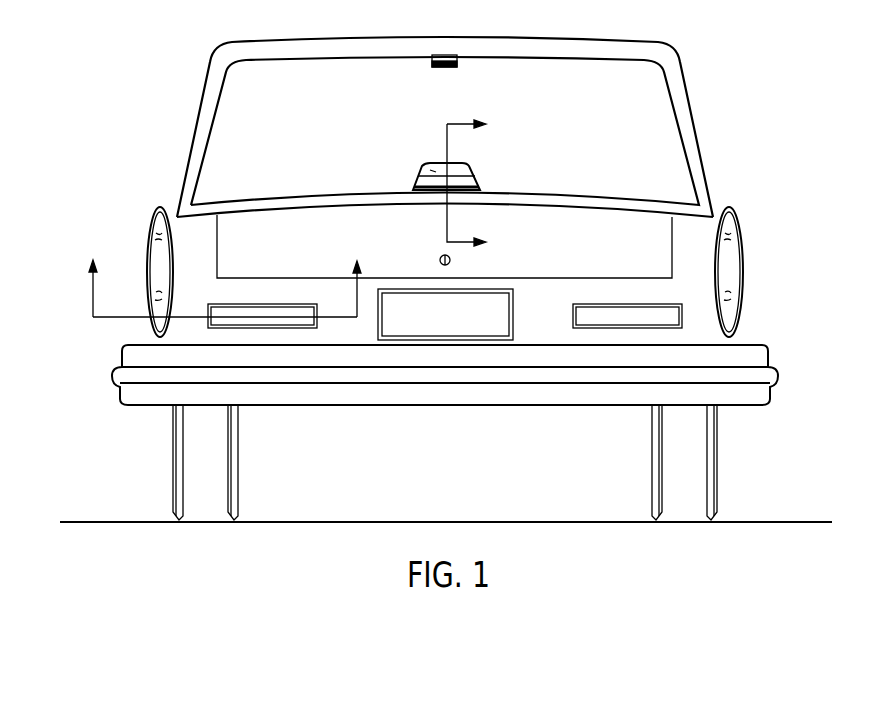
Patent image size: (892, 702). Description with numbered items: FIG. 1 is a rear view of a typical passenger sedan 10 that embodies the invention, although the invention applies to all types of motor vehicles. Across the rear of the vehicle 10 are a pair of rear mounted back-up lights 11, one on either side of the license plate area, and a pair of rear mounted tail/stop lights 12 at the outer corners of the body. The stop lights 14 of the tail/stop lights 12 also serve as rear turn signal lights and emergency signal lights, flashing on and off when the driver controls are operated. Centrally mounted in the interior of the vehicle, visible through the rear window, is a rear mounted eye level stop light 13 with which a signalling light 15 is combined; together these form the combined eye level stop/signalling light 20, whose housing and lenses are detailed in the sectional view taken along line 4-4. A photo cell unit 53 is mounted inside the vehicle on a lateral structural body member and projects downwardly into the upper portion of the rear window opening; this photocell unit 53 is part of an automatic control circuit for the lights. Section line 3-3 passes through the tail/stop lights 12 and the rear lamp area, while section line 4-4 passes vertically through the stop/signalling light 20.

The passenger sedan 10 is at (560, 39).
The back-up lights 11 is at (270, 304).
The tail/stop lights 12 is at (156, 210).
The eye level stop light 13 is at (412, 190).
The stop lights 14 is at (142, 310).
The signalling light 15 is at (428, 167).
The combined eye level stop/signalling light 20 is at (480, 184).
The photo cell unit 53 is at (433, 57).
The section line 3- 3 is at (225, 267).
The section line 4- 4 is at (483, 180).